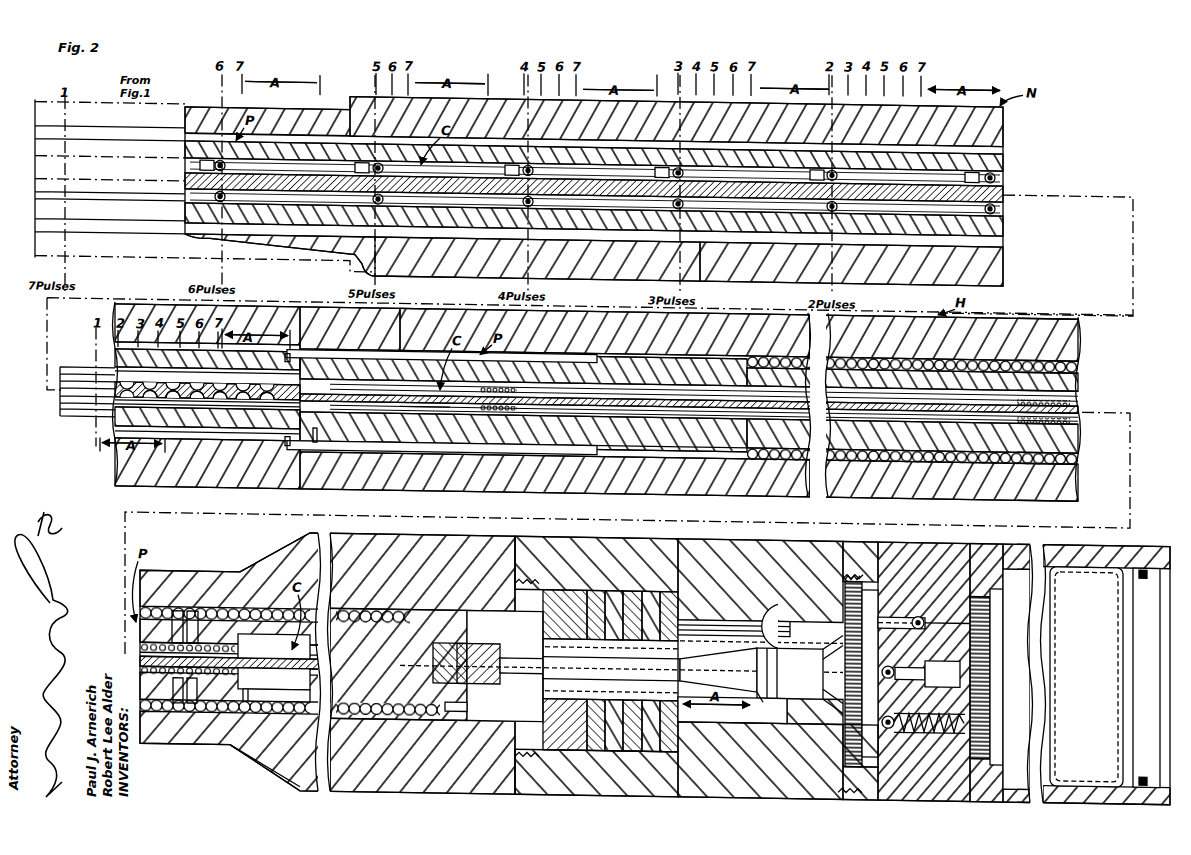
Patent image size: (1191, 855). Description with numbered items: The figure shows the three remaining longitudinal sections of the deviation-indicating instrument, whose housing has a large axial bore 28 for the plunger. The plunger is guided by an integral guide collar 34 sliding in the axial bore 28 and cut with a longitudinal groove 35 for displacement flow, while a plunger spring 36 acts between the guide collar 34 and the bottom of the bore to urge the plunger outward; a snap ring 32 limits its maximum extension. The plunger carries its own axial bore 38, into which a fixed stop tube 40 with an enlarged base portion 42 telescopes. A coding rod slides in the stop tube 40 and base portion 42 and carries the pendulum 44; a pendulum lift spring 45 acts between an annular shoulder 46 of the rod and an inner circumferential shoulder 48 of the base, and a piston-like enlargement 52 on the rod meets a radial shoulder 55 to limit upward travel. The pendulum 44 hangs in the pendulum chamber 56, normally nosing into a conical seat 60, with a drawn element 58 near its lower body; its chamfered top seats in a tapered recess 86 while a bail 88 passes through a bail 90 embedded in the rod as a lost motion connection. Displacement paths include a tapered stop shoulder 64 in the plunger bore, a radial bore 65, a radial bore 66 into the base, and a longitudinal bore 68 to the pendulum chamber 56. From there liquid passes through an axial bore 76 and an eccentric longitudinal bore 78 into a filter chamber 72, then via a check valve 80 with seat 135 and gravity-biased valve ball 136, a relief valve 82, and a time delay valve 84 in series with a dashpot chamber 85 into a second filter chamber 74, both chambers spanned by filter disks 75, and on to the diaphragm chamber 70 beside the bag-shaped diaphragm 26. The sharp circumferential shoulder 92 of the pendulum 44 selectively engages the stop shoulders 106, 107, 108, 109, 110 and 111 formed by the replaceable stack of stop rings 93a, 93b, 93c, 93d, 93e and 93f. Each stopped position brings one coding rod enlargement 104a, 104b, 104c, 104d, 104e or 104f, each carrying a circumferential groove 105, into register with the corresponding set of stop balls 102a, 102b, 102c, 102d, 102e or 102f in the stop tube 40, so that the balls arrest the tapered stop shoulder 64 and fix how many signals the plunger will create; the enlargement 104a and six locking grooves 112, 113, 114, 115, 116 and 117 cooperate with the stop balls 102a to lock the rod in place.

The diaphragm 26 is at (1125, 615).
The axial bore 28 is at (1006, 134).
The snap ring 32 is at (300, 340).
The guide collar 34 is at (655, 462).
The longitudinal groove 35 is at (722, 338).
The plunger spring 36 is at (888, 346).
The axial bore 38 is at (131, 176).
The stop tube 40 is at (192, 615).
The base portion 42 is at (295, 700).
The pendulum 44 is at (621, 667).
The pendulum lift spring 45 is at (274, 646).
The annular shoulder 46 is at (455, 446).
The inner circumferential shoulder 48 is at (220, 680).
The piston-like enlargement 52 is at (370, 709).
The radial shoulder 55 is at (274, 679).
The pendulum chamber 56 is at (745, 609).
The piston head 58 is at (790, 673).
The conical seat 60 is at (765, 690).
The tapered stop shoulder 64 is at (596, 401).
The radial bore 65 is at (290, 441).
The radial bore 66 is at (240, 742).
The longitudinal bore 68 is at (470, 713).
The diaphragm chamber 70 is at (1086, 677).
The filter chamber 72 is at (860, 575).
The second filter chamber 74 is at (1003, 610).
The filter disks 75 is at (845, 580).
The axial bore 76 is at (830, 640).
The longitudinal bore 78 is at (838, 715).
The check valve 80 is at (922, 602).
The relief valve 82 is at (892, 715).
The time delay valve 84 is at (890, 652).
The dashpot chamber 85 is at (945, 650).
The tapered recess 86 is at (436, 640).
The bail 88 is at (465, 648).
The bail 90 is at (450, 704).
The circumferential shoulder 92 is at (765, 623).
The stop ring 93a is at (566, 573).
The stop ring 93b is at (596, 581).
The stop ring 93c is at (614, 581).
The stop ring 93d is at (633, 581).
The stop ring 93e is at (651, 581).
The stop ring 93f is at (669, 581).
The stop balls 102a is at (1006, 144).
The stop balls 102b is at (834, 152).
The stop balls 102c is at (701, 150).
The stop balls 102d is at (557, 147).
The stop balls 102e is at (394, 144).
The stop balls 102f is at (205, 143).
The circumferential enlargement 104a is at (322, 345).
The circumferential enlargement 104b is at (1006, 172).
The circumferential enlargement 104c is at (840, 157).
The circumferential enlargement 104d is at (676, 157).
The circumferential enlargement 104e is at (525, 157).
The circumferential enlargement 104f is at (372, 156).
The circumferential groove 105 is at (1006, 206).
The stop shoulder 106 is at (565, 737).
The stop shoulder 107 is at (596, 741).
The stop shoulder 108 is at (614, 741).
The stop shoulder 109 is at (633, 741).
The stop shoulder 110 is at (668, 741).
The stop shoulder 111 is at (690, 711).
The locking groove 112 is at (267, 400).
The locking groove 113 is at (243, 400).
The locking groove 114 is at (220, 400).
The locking groove 115 is at (197, 400).
The locking groove 116 is at (173, 400).
The locking groove 117 is at (150, 400).
The seat 135 is at (940, 602).
The valve ball 136 is at (913, 602).